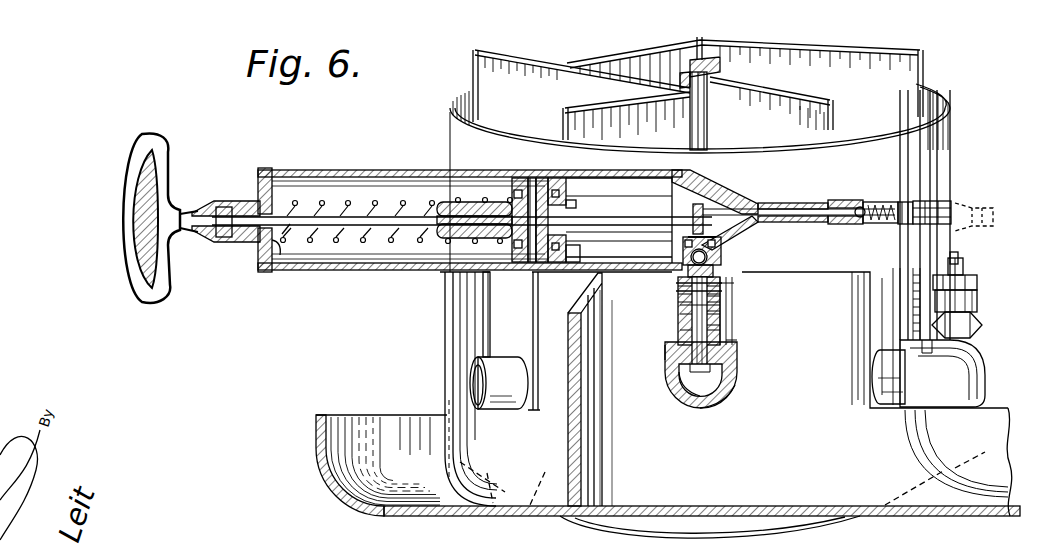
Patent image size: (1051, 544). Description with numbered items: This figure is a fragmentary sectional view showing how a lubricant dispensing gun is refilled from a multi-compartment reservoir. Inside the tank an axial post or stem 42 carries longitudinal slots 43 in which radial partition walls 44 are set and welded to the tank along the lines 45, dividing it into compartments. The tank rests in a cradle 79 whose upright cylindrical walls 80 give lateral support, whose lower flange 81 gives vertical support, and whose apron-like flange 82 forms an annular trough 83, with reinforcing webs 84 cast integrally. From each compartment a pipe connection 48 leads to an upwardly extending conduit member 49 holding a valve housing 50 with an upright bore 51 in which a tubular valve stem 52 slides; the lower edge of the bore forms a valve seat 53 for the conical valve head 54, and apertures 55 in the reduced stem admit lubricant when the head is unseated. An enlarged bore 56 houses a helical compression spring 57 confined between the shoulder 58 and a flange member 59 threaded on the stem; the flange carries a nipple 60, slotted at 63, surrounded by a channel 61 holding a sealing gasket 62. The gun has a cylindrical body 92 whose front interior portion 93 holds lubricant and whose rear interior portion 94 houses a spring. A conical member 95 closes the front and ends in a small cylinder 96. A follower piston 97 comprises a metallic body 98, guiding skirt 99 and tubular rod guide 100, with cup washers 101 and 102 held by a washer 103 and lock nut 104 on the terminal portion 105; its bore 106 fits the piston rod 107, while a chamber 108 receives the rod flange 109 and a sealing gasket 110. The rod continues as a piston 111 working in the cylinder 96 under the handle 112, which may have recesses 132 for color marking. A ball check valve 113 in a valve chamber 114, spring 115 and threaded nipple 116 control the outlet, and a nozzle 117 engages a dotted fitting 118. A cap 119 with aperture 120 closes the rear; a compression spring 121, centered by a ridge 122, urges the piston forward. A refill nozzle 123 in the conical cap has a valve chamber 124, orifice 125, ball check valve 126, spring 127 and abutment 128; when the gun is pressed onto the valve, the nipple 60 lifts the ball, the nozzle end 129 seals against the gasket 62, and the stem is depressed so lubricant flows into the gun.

The axial post or stem 42 is at (720, 73).
The slots 43 is at (681, 80).
The radial partition walls 44 is at (473, 68).
The weld lines 45 is at (478, 108).
The conduit or pipe connection 48 is at (505, 364).
The upwardly extending conduit member 49 is at (736, 402).
The valve housing 50 is at (668, 350).
The upright bore 51 is at (735, 347).
The tubular valve stem 52 is at (726, 327).
The annular valve seat 53 is at (684, 378).
The valve head 54 is at (690, 400).
The apertures 55 is at (738, 382).
The upper enlarged diameter bore 56 is at (724, 312).
The helical compression spring 57 is at (680, 316).
The annular shoulder 58 is at (678, 332).
The annular flange member 59 is at (683, 306).
The tubular projection or nipple 60 is at (964, 268).
The annular groove or channel 61 is at (680, 298).
The packing or sealing gasket 62 is at (724, 297).
The slot 63 is at (716, 274).
The cradle 79 is at (470, 516).
The upright cylindrical walls 80 is at (445, 306).
The lower flange 81 is at (482, 477).
The outer annular apron-like flange 82 is at (316, 440).
The annular trough 83 is at (388, 432).
The reinforcing webs 84 is at (602, 440).
The cylindrical shell-like body 92 is at (390, 171).
The front interior portion 93 is at (619, 219).
The rear interior portion 94 is at (397, 211).
The conical member 95 is at (716, 190).
The small diameter cylindrical member 96 is at (812, 204).
The follower piston 97 is at (530, 200).
The metallic body 98 is at (446, 203).
The cylindrical guiding skirt portion 99 is at (452, 202).
The tubular rod guide member 100 is at (452, 238).
The cup-shaped washer or gasket 101 is at (540, 178).
The cup-shaped washer or gasket 102 is at (556, 178).
The washer 103 is at (566, 253).
The lock nut 104 is at (584, 242).
The front terminal portion 105 is at (556, 233).
The bore 106 is at (398, 238).
The piston rod 107 is at (353, 228).
The enlarged bore or chamber 108 is at (556, 205).
The flange 109 is at (692, 212).
The annular sealing gasket 110 is at (512, 246).
The piston 111 is at (748, 208).
The handle 112 is at (170, 158).
The spring-pressed ball check valve 113 is at (856, 200).
The valve chamber 114 is at (850, 226).
The spring 115 is at (879, 202).
The screw threaded nipple 116 is at (906, 226).
The connector or nozzle member 117 is at (945, 206).
The fitting 118 is at (990, 204).
The cap 119 is at (266, 272).
The aperture 120 is at (232, 242).
The helical compression spring 121 is at (300, 181).
The annular ridge 122 is at (277, 238).
The refill nozzle 123 is at (676, 283).
The valve chamber 124 is at (732, 236).
The orifice 125 is at (676, 291).
The spring-pressed ball check valve 126 is at (683, 260).
The helical compression spring 127 is at (692, 252).
The stationary abutment 128 is at (699, 244).
The outer annular end 129 is at (724, 286).
The recesses 132 is at (142, 232).